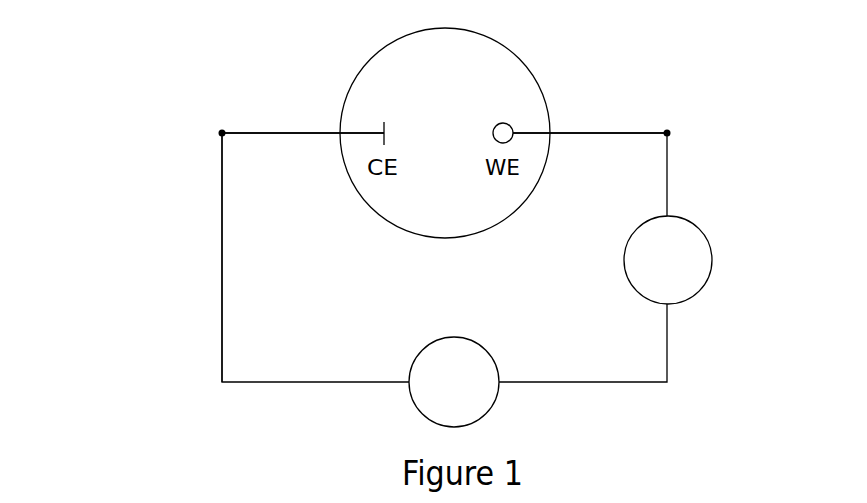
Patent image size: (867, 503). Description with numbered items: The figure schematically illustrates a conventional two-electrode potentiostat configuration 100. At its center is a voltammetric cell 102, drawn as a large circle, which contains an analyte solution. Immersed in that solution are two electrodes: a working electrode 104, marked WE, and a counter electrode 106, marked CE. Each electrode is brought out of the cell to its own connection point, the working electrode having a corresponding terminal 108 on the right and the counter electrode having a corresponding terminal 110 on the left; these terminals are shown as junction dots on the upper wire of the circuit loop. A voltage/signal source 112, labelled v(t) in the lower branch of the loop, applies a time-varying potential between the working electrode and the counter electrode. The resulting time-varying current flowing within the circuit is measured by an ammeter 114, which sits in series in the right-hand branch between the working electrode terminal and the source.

The two-electrode potentiostat configuration 100 is at (113, 113).
The voltammetric cell 102 is at (527, 65).
The working electrode 104 is at (510, 125).
The counter electrode 106 is at (383, 141).
The terminal 108 is at (667, 133).
The terminal 110 is at (222, 133).
The voltage/signal source 112 is at (413, 365).
The ammeter 114 is at (712, 268).